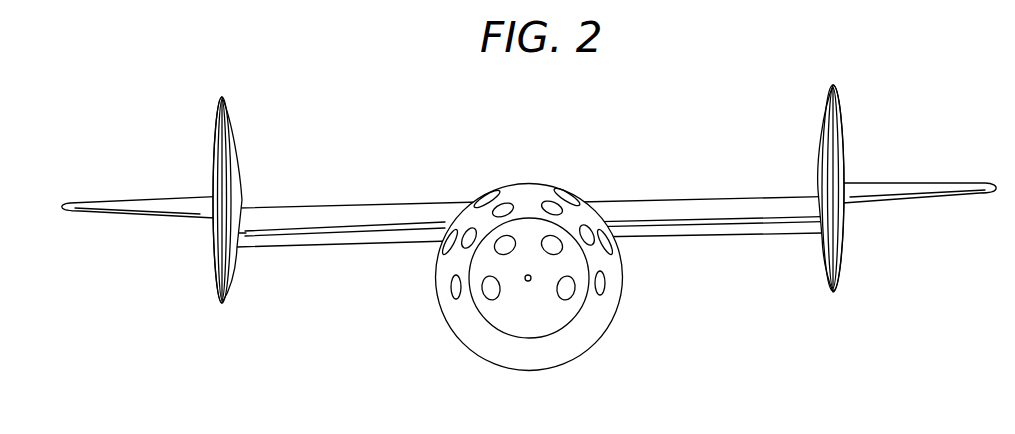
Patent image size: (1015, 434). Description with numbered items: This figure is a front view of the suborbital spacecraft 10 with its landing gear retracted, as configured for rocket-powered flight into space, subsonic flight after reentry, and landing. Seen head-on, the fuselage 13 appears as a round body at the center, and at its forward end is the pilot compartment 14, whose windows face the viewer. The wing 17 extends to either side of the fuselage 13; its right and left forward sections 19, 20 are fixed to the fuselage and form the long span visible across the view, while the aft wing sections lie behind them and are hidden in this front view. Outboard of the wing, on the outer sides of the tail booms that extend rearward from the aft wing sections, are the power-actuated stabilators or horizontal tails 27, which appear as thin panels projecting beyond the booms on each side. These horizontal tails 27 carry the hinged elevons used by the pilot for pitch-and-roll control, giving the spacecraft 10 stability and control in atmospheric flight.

The suborbital spacecraft 10 is at (457, 158).
The fuselage 13 is at (550, 183).
The pilot compartment 14 is at (573, 337).
The wing 17 is at (650, 198).
The right forward wing section 19 is at (372, 229).
The left forward wing section 20 is at (728, 223).
The horizontal tail 27 is at (165, 196).